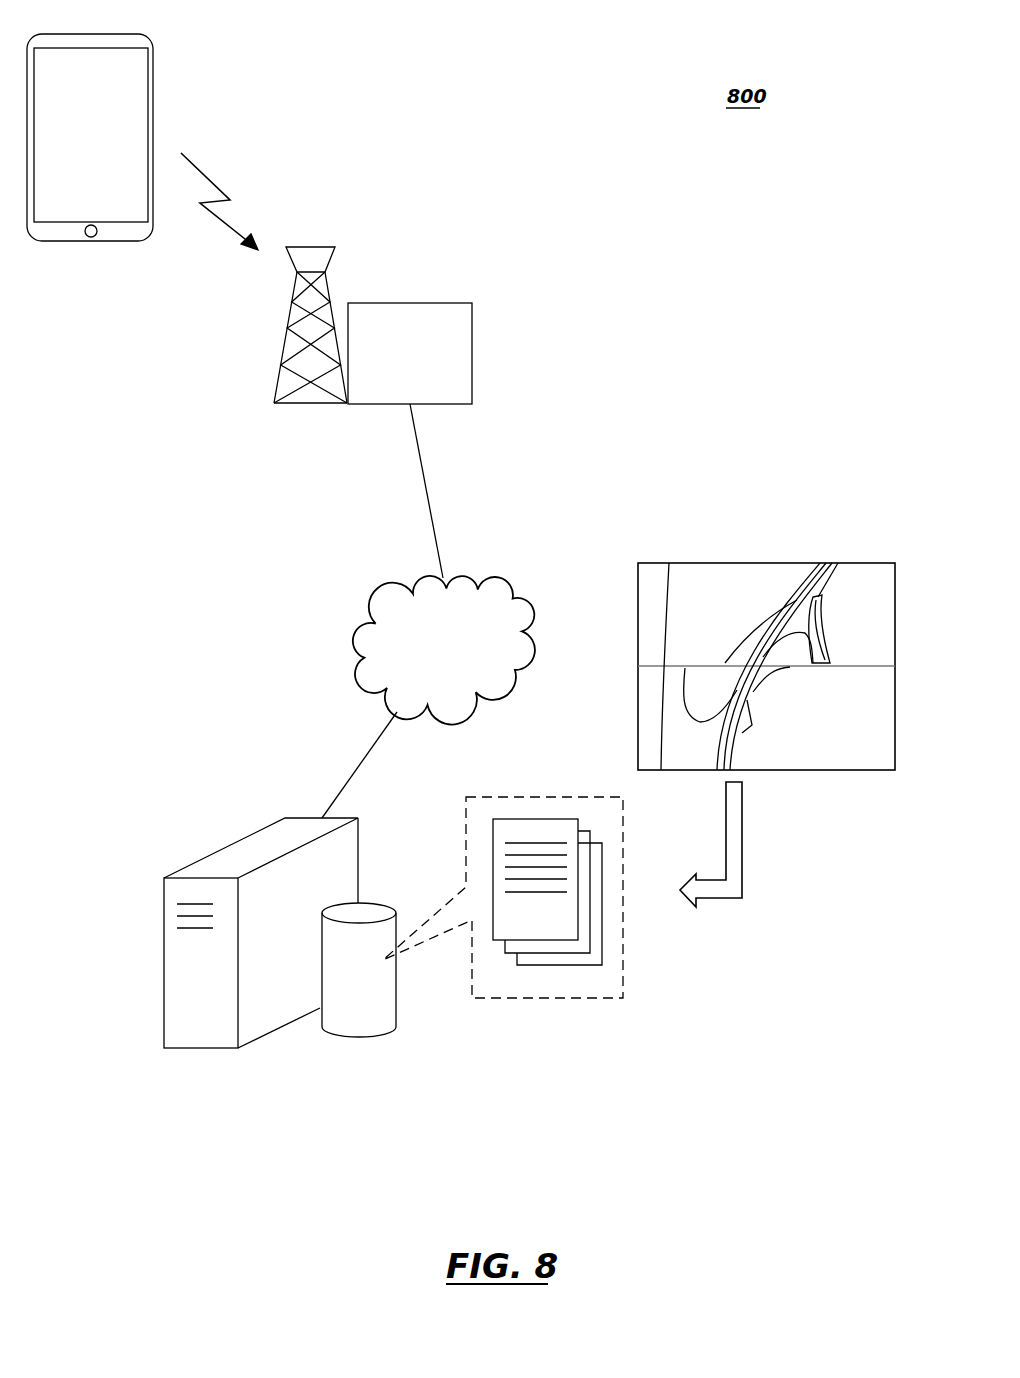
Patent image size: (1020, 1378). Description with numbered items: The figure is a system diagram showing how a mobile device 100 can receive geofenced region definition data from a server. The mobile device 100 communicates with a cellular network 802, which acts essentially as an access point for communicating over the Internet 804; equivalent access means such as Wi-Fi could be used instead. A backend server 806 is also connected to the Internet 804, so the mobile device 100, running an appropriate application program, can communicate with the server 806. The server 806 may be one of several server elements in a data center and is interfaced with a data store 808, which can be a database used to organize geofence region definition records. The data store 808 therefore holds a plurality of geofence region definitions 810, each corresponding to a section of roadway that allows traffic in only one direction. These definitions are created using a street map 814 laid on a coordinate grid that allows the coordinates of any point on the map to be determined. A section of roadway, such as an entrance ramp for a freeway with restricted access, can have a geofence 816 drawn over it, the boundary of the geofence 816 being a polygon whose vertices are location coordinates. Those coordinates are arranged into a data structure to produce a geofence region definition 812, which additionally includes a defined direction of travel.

The mobile device 100 is at (154, 100).
The cellular network 802 is at (373, 308).
The Internet 804 is at (370, 610).
The backend server 806 is at (222, 862).
The data store 808 is at (372, 1040).
The geofence region definitions 810 is at (548, 998).
The geofence region definition 812 is at (545, 819).
The street map 814 is at (725, 563).
The geofence 816 is at (827, 623).